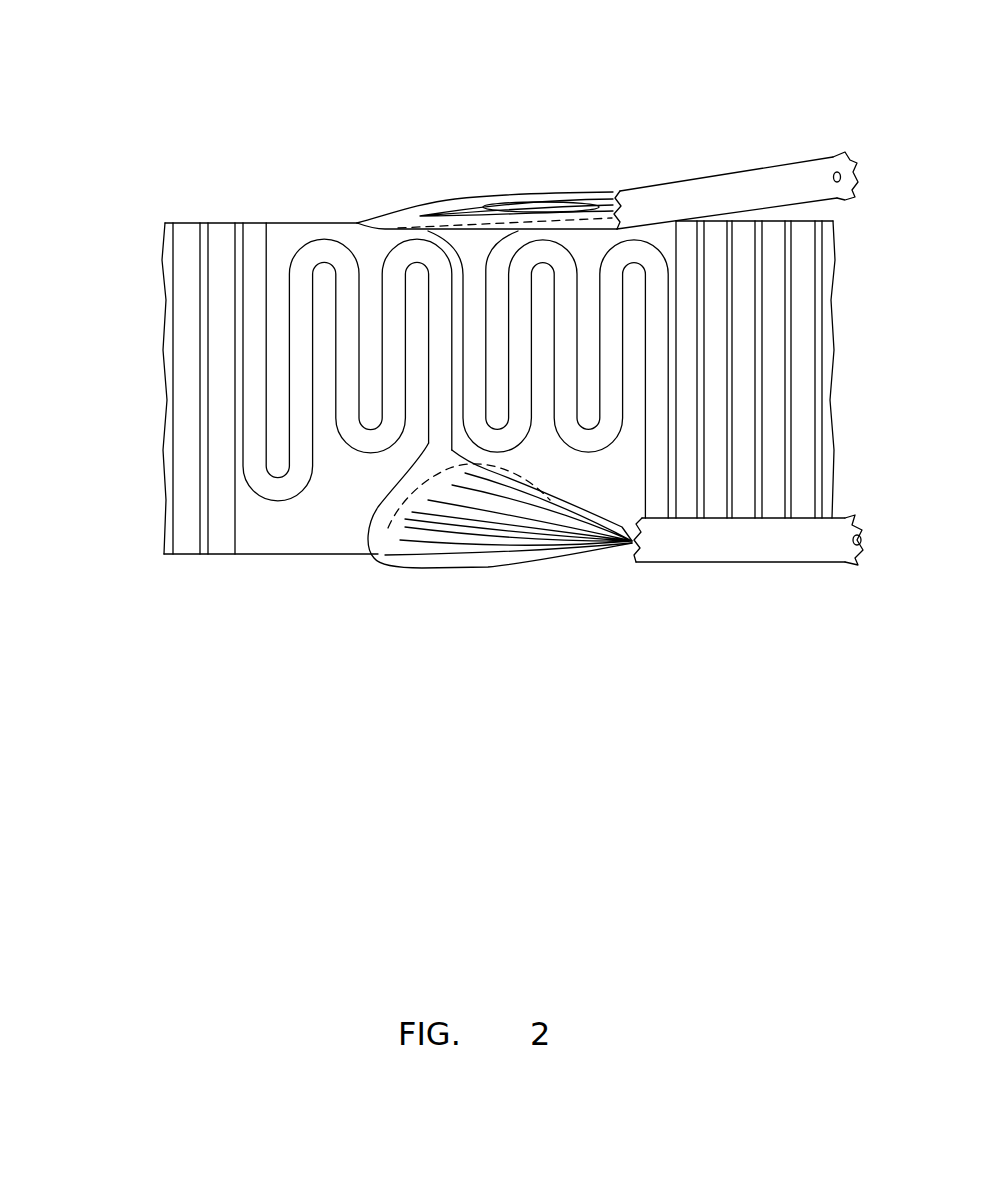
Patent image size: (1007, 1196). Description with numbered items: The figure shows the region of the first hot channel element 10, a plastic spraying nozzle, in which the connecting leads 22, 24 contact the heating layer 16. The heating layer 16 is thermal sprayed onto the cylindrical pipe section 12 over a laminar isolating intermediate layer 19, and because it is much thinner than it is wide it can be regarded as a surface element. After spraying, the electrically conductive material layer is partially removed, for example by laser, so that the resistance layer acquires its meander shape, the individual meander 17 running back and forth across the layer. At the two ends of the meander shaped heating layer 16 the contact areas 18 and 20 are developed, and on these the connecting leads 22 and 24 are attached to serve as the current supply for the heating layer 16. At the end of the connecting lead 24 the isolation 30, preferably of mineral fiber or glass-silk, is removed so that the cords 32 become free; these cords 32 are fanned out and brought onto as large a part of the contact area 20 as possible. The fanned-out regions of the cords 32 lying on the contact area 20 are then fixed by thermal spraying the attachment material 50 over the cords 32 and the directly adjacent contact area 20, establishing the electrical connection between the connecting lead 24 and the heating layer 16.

The hot channel element 10 is at (238, 132).
The cylindrical pipe section 12 is at (287, 238).
The heating layer 16 is at (280, 520).
The meander 17 is at (255, 362).
The contact area 18 is at (478, 252).
The isolating intermediate layer 19 is at (250, 540).
The contact area 20 is at (383, 530).
The connecting lead 22 is at (748, 203).
The connecting lead 24 is at (807, 528).
The isolation 30 is at (712, 549).
The cords 32 is at (545, 550).
The attachment material 50 is at (380, 532).